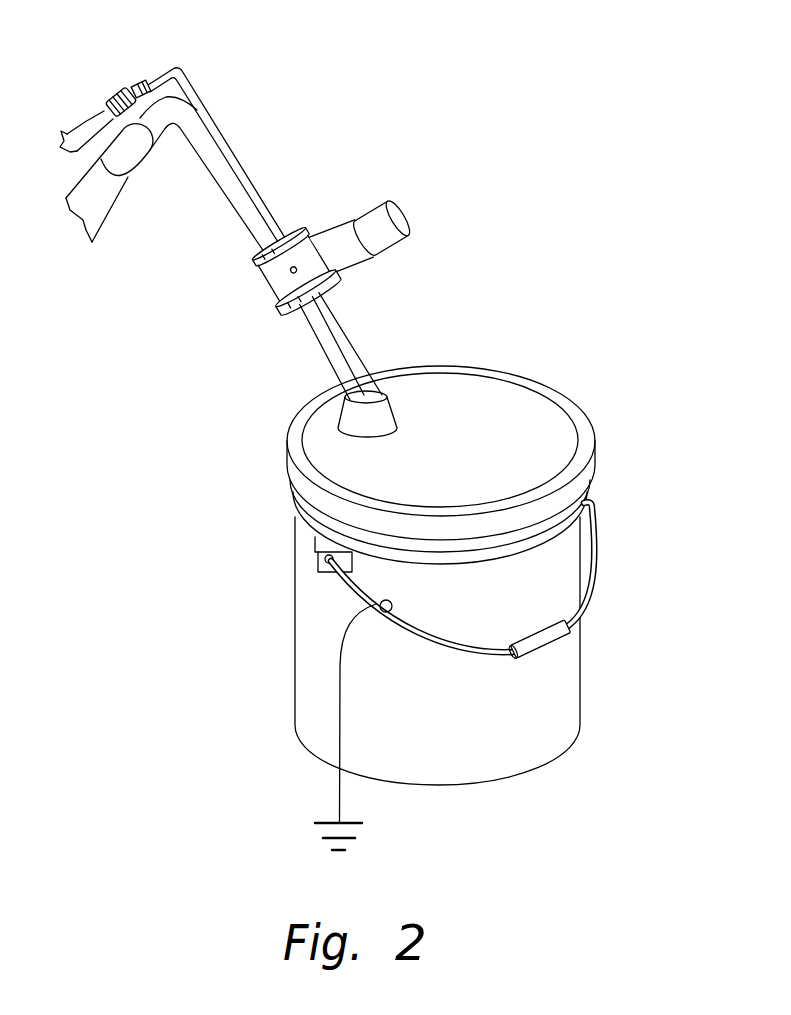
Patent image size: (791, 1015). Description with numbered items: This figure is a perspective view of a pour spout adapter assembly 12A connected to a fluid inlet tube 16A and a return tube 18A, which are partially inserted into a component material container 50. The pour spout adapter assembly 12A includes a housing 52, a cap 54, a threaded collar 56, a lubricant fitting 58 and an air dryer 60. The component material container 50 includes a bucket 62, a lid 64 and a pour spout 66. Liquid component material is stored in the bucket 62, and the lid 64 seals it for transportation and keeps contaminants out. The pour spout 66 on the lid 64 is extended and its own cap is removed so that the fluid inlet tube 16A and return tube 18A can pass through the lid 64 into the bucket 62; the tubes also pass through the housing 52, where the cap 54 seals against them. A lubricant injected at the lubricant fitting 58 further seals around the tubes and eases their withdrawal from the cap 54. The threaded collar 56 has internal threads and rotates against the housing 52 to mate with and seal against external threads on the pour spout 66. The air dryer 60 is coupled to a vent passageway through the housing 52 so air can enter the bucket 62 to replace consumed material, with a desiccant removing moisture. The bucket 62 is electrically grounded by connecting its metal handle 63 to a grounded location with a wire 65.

The pour spout adapter assembly 12A is at (321, 221).
The fluid inlet tube 16A is at (231, 184).
The return tube 18A is at (189, 78).
The component material container 50 is at (442, 565).
The housing 52 is at (270, 286).
The cap 54 is at (255, 262).
The threaded collar 56 is at (279, 313).
The lubricant fitting 58 is at (297, 265).
The air dryer 60 is at (429, 212).
The bucket 62 is at (491, 734).
The metal handle 63 is at (596, 574).
The lid 64 is at (484, 454).
The wire 65 is at (338, 709).
The pour spout 66 is at (386, 421).